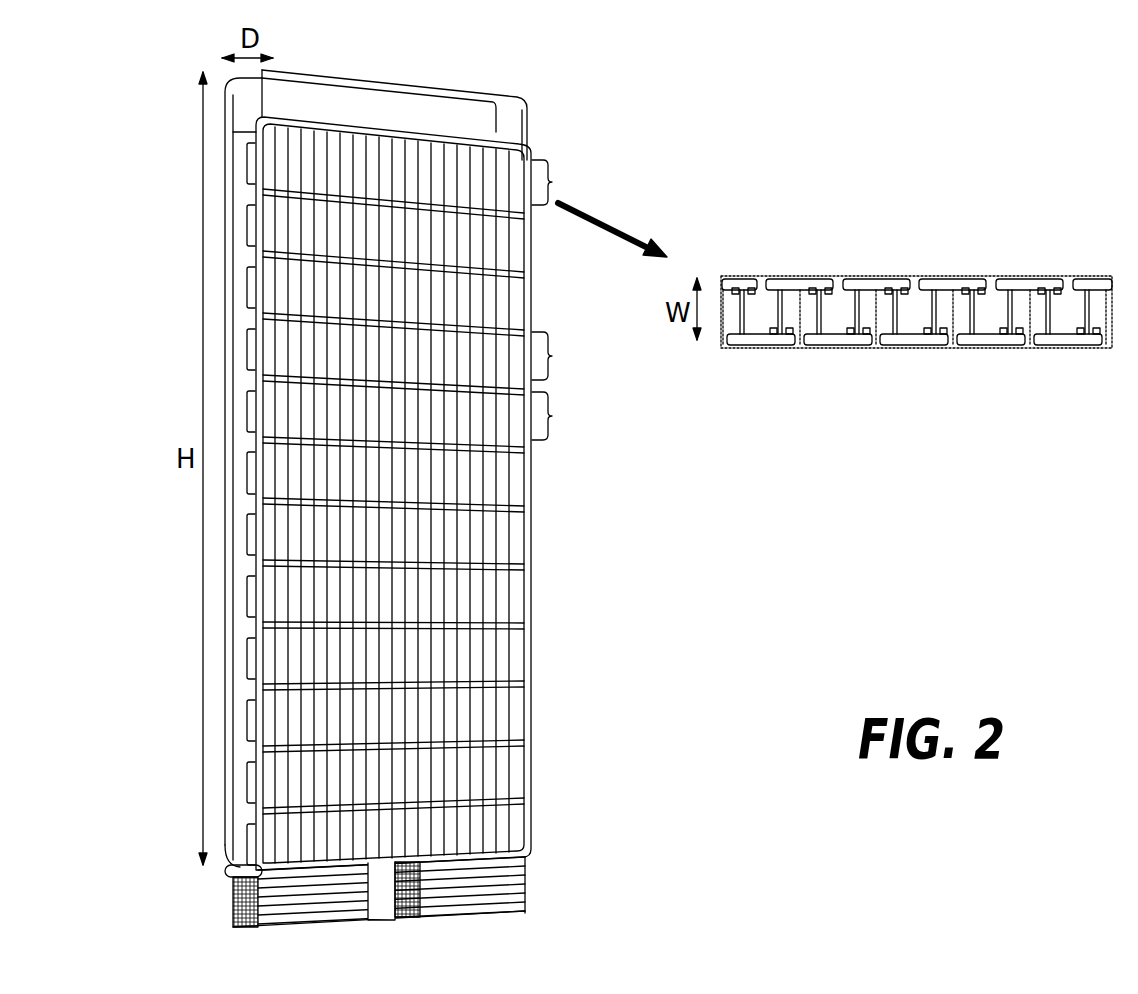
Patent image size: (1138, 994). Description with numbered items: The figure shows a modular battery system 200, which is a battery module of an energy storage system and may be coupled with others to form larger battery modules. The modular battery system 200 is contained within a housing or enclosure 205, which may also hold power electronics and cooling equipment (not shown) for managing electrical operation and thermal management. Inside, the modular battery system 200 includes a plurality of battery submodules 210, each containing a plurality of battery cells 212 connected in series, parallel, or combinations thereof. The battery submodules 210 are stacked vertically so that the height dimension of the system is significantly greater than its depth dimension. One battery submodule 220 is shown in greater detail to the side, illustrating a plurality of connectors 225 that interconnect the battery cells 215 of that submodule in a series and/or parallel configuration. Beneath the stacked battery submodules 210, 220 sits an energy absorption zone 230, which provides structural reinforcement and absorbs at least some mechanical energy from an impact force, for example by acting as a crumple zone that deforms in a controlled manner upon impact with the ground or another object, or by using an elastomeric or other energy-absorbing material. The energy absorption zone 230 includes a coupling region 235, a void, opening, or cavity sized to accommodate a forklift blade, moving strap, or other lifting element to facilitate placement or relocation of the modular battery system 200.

The modular battery system 200 is at (1088, 96).
The enclosure 205 is at (541, 100).
The battery submodules 210 is at (560, 418).
The battery cells 212 is at (493, 531).
The battery cells 215 is at (1095, 312).
The battery submodule 220 is at (564, 182).
The connectors 225 is at (938, 275).
The energy absorption zone 230 is at (456, 906).
The coupling region 235 is at (388, 915).